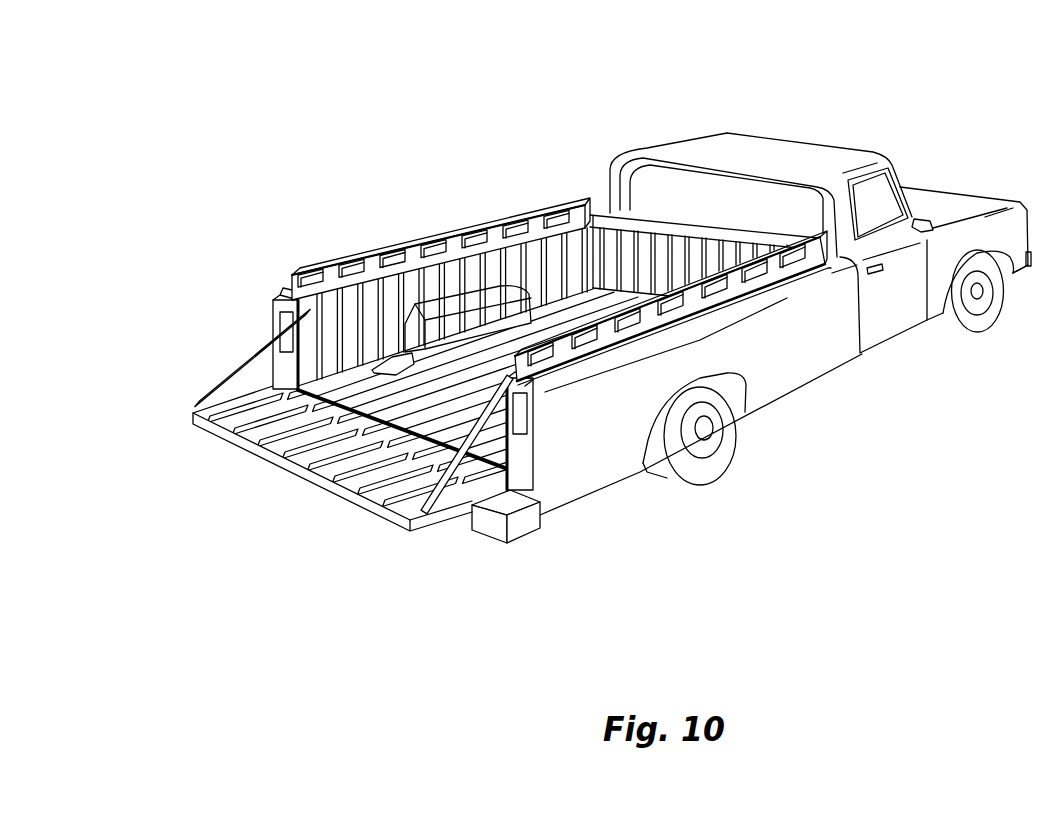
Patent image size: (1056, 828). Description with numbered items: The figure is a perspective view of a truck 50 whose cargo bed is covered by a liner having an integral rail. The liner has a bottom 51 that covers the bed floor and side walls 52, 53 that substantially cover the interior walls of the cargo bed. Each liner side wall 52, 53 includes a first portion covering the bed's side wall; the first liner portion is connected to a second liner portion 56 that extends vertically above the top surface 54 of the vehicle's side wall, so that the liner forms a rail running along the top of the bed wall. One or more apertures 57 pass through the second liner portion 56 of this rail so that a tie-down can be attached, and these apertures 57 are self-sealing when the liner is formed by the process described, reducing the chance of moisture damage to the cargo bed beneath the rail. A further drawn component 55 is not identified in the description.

The truck 50 is at (773, 150).
The bottom 51 is at (422, 398).
The side wall 52 is at (297, 372).
The side wall 53 is at (472, 480).
The top surface 54 is at (275, 292).
The corner post 55 is at (553, 380).
The second liner portion 56 is at (440, 250).
The apertures 57 is at (306, 288).